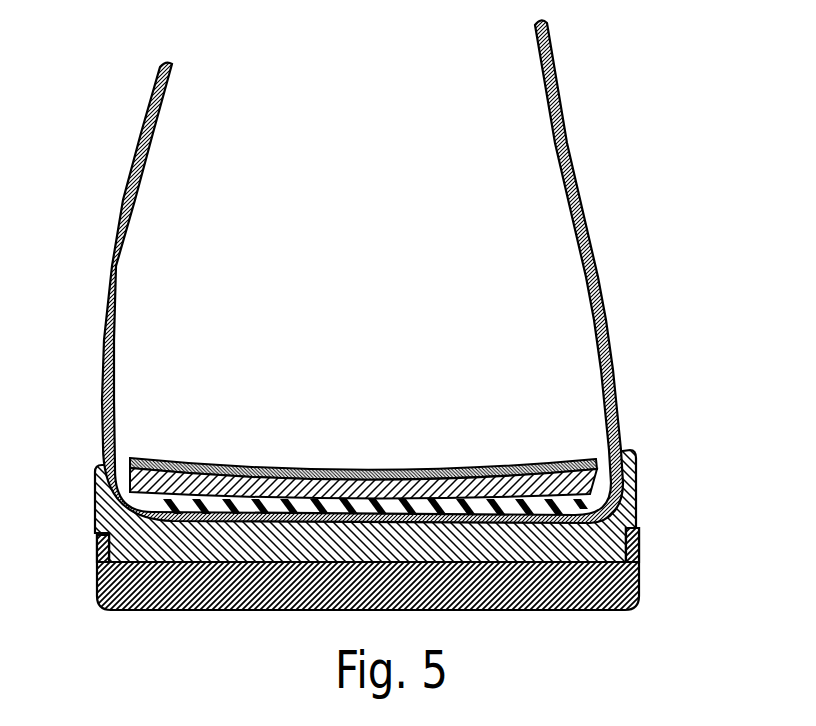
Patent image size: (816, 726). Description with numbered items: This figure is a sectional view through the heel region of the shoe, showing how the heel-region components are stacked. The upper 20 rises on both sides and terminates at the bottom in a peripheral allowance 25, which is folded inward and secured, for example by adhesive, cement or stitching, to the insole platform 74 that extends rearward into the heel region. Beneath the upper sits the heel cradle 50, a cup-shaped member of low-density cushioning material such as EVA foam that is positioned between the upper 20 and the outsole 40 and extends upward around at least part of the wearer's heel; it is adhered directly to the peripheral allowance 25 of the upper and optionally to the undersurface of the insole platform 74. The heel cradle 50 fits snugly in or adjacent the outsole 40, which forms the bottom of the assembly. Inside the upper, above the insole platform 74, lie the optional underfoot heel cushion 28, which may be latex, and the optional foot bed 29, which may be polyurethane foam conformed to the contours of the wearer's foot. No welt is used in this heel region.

The upper 20 is at (600, 289).
The peripheral allowance 25 is at (638, 540).
The underfoot heel cushion 28 is at (372, 493).
The foot bed 29 is at (280, 467).
The outsole 40 is at (630, 590).
The heel cradle 50 is at (636, 472).
The insole platform 74 is at (170, 497).